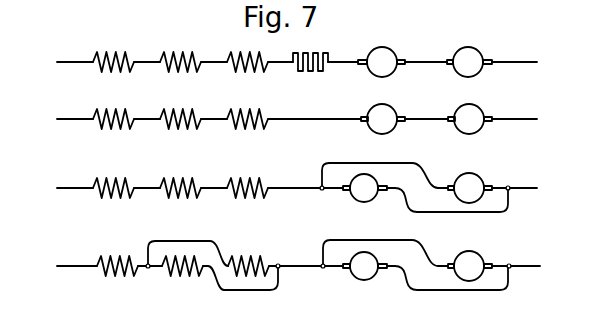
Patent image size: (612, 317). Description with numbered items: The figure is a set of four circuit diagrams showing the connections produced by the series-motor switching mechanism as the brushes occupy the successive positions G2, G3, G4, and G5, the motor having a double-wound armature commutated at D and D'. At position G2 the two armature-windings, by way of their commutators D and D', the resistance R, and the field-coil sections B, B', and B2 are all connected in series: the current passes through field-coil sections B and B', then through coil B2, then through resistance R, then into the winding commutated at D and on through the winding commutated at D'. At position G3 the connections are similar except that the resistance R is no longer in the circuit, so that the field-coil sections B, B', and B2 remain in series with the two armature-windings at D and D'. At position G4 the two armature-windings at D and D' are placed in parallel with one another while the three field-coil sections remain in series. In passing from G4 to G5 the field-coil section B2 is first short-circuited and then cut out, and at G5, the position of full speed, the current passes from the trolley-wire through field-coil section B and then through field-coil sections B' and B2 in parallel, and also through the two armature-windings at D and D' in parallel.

The brush position line G2 is at (278, 54).
The brush position line G3 is at (278, 120).
The brush position line G4 is at (278, 187).
The brush position line G5 is at (279, 265).
The field-coil section B is at (113, 53).
The field-coil section B' is at (180, 53).
The field-coil section B2 is at (247, 53).
The resistance R is at (310, 53).
The commutator D is at (381, 53).
The commutator D' is at (469, 53).